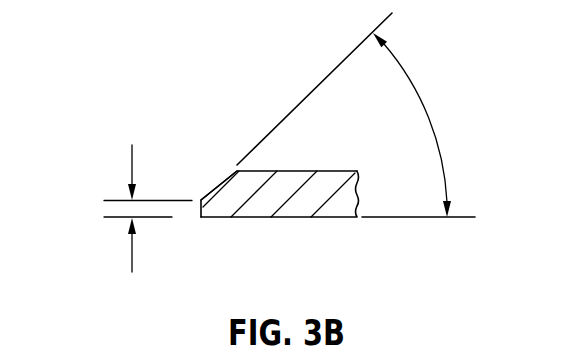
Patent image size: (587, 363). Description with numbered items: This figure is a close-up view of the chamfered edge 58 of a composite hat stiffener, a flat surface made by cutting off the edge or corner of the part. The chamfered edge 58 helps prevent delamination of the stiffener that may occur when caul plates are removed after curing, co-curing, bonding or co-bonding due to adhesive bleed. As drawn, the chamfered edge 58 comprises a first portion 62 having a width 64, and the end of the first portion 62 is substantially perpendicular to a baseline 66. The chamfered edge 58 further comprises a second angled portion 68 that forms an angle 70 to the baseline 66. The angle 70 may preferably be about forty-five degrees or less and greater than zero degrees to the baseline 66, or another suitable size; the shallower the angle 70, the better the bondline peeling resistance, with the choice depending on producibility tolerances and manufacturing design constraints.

The chamfered edge 58 is at (228, 134).
The first portion 62 is at (207, 201).
The width 64 is at (112, 208).
The baseline 66 is at (390, 218).
The second angled portion 68 is at (201, 199).
The angle 70 is at (425, 110).